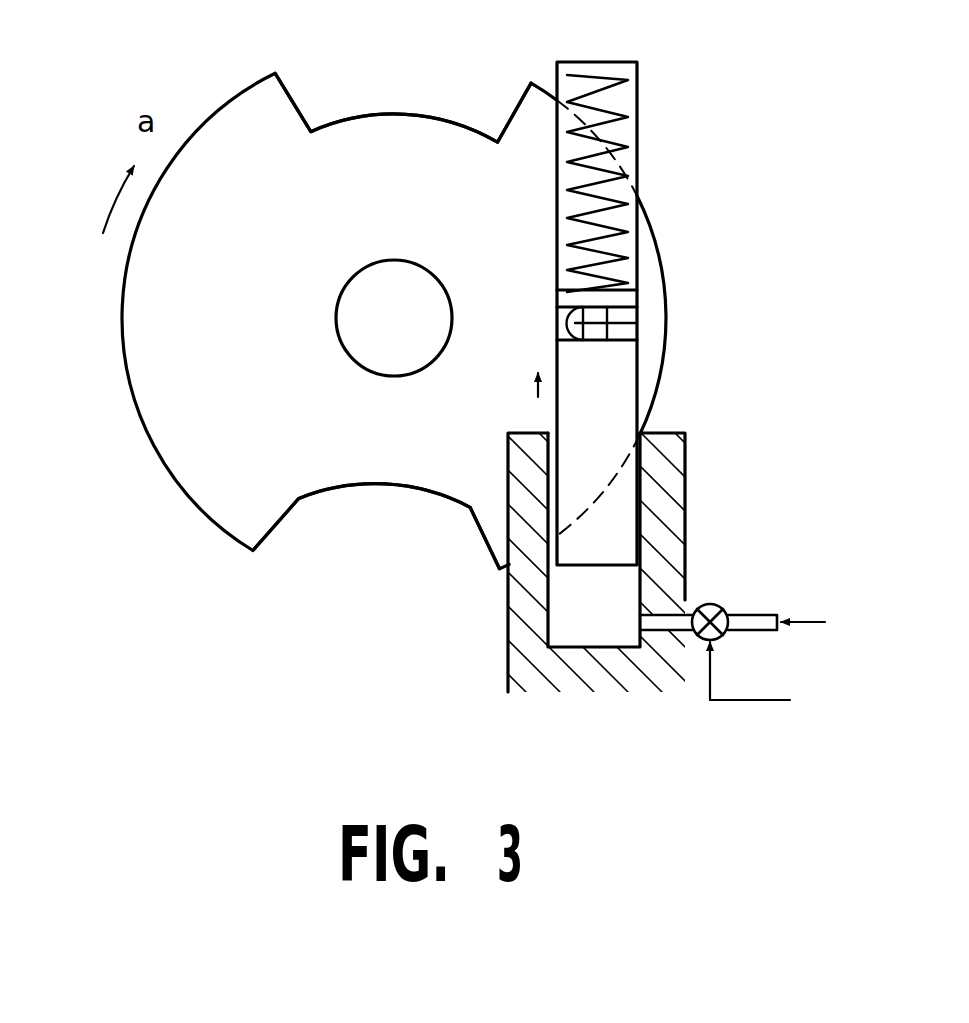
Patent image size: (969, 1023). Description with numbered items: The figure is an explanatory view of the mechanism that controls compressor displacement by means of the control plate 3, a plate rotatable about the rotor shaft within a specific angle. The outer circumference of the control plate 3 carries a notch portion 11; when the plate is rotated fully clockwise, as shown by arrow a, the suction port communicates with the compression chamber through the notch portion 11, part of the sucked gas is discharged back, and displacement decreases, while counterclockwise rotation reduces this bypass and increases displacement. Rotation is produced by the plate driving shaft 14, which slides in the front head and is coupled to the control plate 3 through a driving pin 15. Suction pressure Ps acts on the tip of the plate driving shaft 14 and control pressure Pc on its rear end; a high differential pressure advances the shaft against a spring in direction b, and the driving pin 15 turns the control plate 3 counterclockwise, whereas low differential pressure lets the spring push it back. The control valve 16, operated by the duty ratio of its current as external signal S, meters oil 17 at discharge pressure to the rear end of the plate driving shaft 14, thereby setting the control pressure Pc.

The control plate 3 is at (170, 453).
The notch portion 11 is at (298, 100).
The plate driving shaft 14 is at (618, 495).
The driving pin 15 is at (600, 322).
The control valve 16 is at (712, 604).
The oil 17 is at (818, 622).